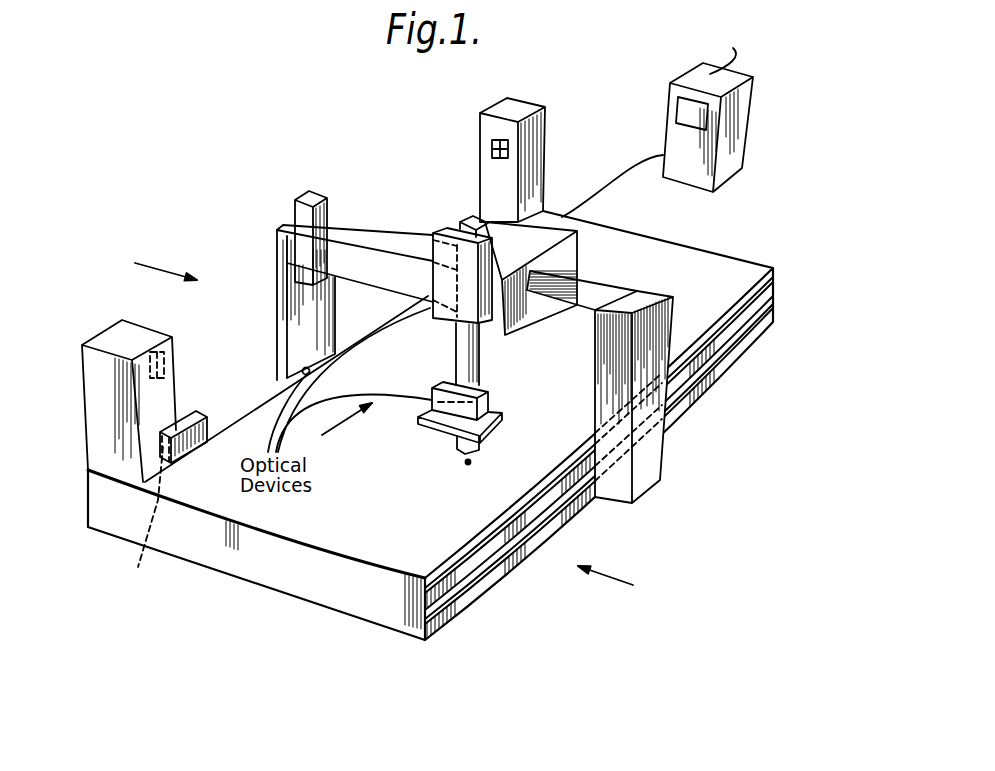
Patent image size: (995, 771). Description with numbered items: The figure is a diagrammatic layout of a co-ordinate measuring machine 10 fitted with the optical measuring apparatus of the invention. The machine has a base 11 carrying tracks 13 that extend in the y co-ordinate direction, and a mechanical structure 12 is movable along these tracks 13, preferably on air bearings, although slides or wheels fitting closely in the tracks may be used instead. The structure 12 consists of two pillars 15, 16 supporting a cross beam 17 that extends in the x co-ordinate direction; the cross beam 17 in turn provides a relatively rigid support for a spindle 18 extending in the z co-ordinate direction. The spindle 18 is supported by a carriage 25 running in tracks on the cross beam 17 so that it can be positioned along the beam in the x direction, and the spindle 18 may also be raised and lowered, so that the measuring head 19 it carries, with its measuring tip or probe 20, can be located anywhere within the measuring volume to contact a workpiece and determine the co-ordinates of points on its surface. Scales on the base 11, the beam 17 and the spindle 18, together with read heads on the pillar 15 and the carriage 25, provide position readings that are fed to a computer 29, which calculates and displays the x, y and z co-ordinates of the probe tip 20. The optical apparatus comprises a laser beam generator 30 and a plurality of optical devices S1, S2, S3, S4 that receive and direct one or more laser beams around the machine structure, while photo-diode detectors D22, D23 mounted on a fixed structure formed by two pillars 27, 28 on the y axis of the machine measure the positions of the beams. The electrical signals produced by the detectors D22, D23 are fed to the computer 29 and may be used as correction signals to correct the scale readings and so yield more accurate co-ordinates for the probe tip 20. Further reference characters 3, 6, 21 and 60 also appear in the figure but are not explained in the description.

The viewing direction 3 is at (166, 259).
The viewing direction 6 is at (341, 422).
The co-ordinate measuring machine 10 is at (612, 567).
The base 11 is at (307, 583).
The mechanical structure 12 is at (625, 276).
The tracks 13 is at (468, 581).
The pillar 15 is at (290, 306).
The pillar 16 is at (652, 447).
The cross beam 17 is at (588, 283).
The spindle 18 is at (482, 376).
The measuring head 19 is at (457, 444).
The measuring tip or probe 20 is at (471, 462).
The probe carrier plate 21 is at (424, 420).
The carriage 25 is at (505, 228).
The pillar 27 is at (100, 377).
The pillar 28 is at (538, 161).
The computer 29 is at (742, 139).
The laser beam generator 30 is at (167, 428).
The carriage 60 is at (434, 234).
The detector D22 is at (493, 143).
The detector D23 is at (163, 358).
The optical device S1 is at (302, 371).
The optical device S2 is at (302, 212).
The optical device S3 is at (443, 308).
The optical device S4 is at (432, 398).